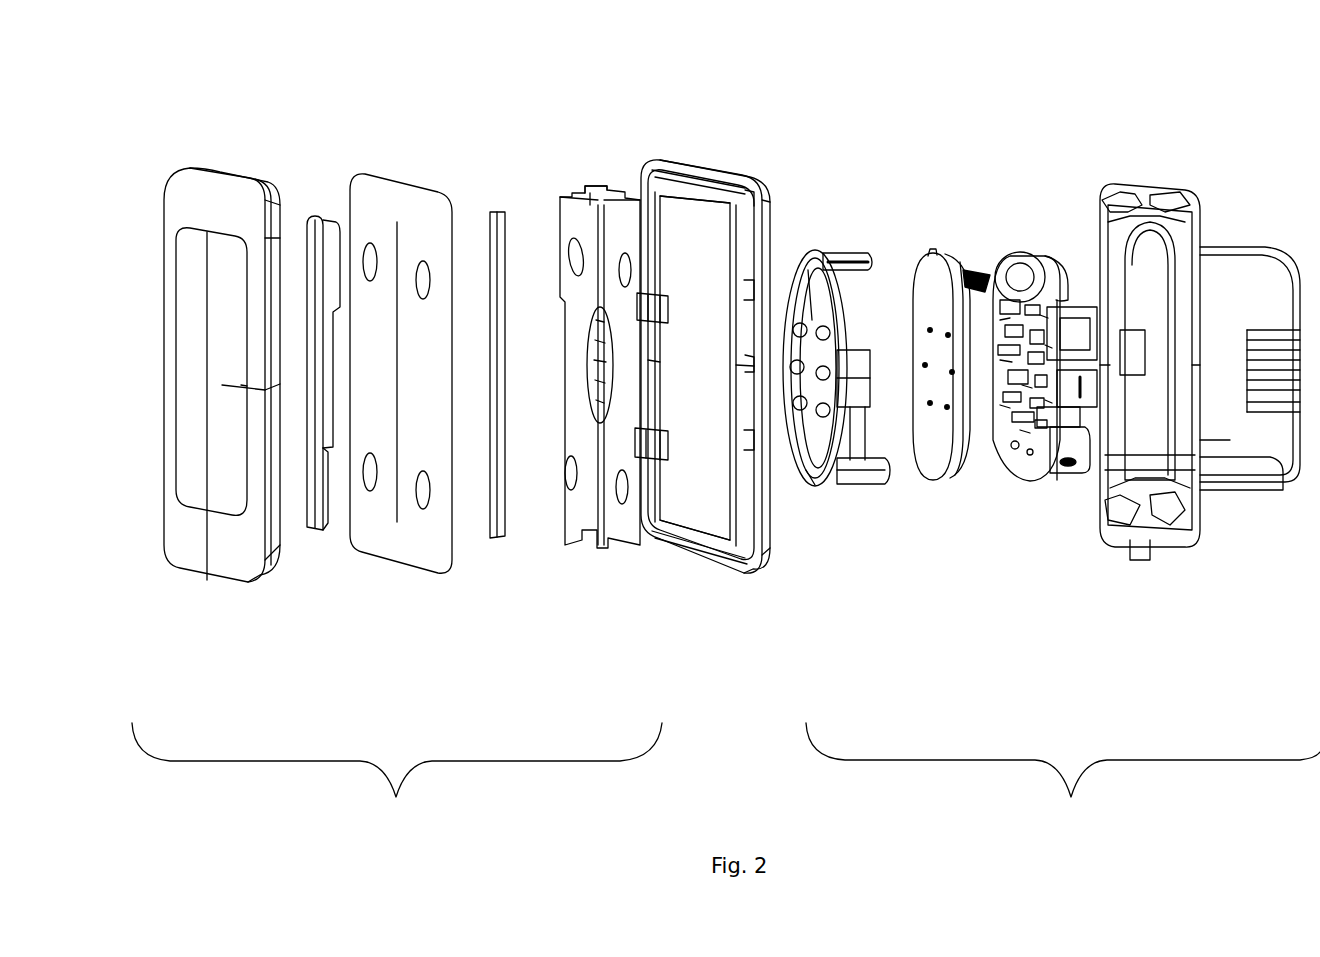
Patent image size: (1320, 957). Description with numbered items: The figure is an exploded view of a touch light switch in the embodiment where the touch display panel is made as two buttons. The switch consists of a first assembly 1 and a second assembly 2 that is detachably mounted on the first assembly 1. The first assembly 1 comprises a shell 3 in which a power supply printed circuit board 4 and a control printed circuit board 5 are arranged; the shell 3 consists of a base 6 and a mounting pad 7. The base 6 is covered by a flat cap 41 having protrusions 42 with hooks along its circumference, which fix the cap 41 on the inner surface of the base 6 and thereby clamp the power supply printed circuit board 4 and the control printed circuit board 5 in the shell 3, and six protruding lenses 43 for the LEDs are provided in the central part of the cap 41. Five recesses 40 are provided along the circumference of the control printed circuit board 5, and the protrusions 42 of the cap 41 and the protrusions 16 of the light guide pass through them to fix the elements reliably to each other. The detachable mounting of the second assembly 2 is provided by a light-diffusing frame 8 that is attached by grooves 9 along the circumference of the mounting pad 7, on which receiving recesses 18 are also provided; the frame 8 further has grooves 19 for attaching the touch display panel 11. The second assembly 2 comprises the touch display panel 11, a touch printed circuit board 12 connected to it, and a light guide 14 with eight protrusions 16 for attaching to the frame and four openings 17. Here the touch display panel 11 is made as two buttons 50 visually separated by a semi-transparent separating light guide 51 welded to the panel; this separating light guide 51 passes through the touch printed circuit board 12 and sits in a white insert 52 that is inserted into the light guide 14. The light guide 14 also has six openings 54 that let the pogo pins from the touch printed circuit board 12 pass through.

The first assembly 1 is at (1063, 777).
The second assembly 2 is at (397, 779).
The shell 3 is at (1191, 373).
The power supply printed circuit board 4 is at (1035, 468).
The control printed circuit board 5 is at (940, 467).
The base 6 is at (1242, 448).
The mounting pad 7 is at (1155, 535).
The frame 8 is at (745, 575).
The grooves of the frame 9 is at (707, 170).
The touch display panel 11 is at (263, 588).
The touch printed circuit board 12 is at (432, 558).
The light guide 14 is at (628, 542).
The protrusions of the light guide 16 is at (598, 200).
The openings of the light guide 17 is at (620, 495).
The receiving recesses 18 is at (1128, 530).
The grooves of the frame for attaching the touch display panel 19 is at (745, 362).
The recesses of the control printed circuit board 40 is at (960, 457).
The flat cap 41 is at (815, 487).
The protrusions with hooks 42 is at (852, 478).
The lenses for the LEDs 43 is at (836, 262).
The two buttons of the touch display panel 50 is at (228, 278).
The separating light guide 51 is at (325, 520).
The insert for the separating light guide 52 is at (495, 538).
The openings of the light guide for the pogo pins 54 is at (590, 345).